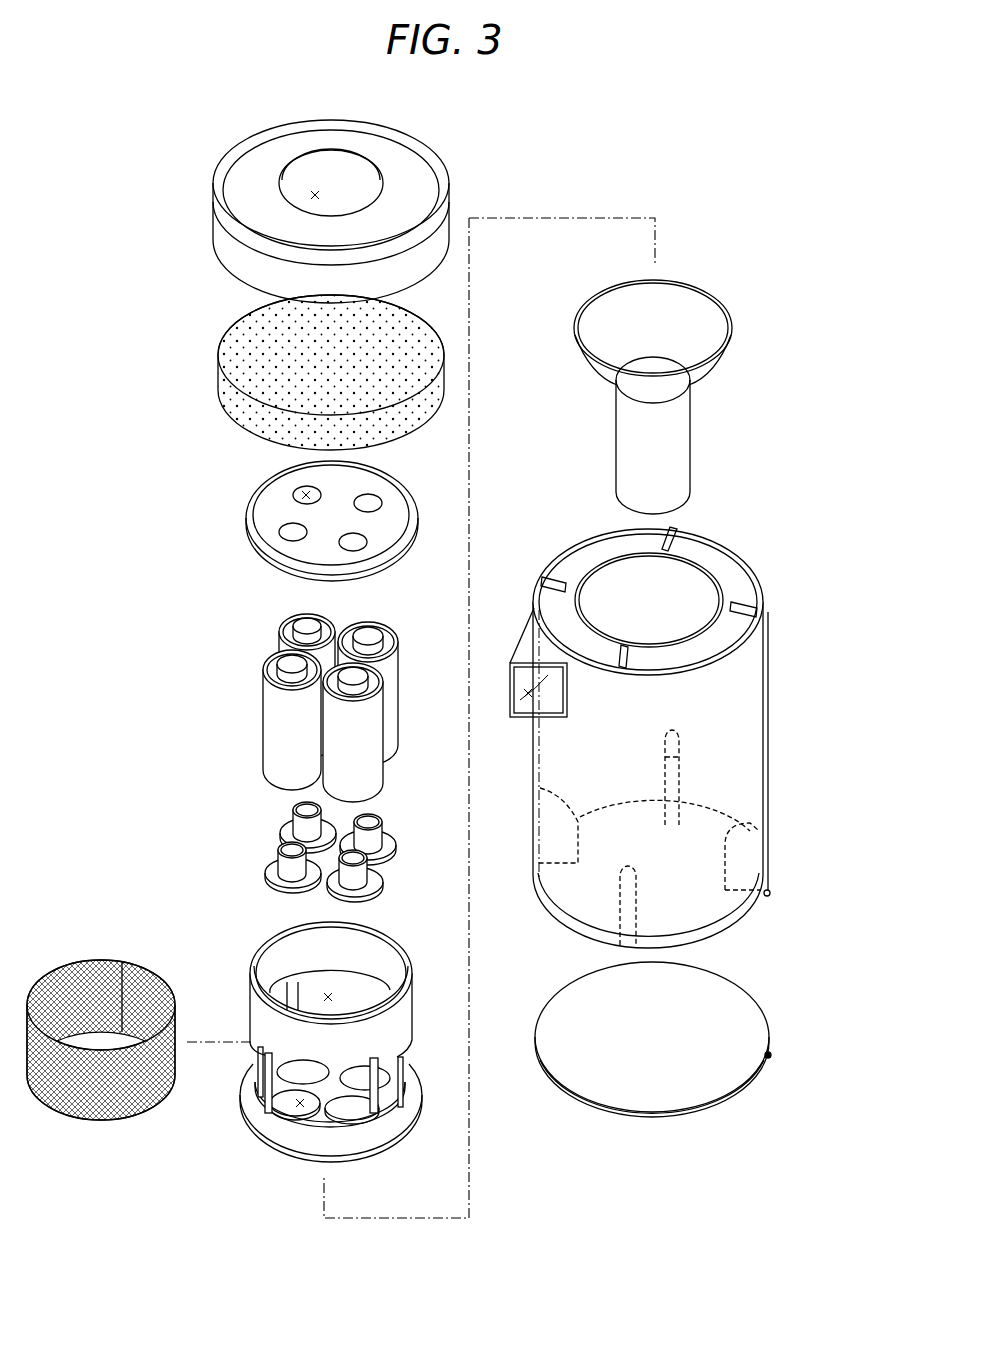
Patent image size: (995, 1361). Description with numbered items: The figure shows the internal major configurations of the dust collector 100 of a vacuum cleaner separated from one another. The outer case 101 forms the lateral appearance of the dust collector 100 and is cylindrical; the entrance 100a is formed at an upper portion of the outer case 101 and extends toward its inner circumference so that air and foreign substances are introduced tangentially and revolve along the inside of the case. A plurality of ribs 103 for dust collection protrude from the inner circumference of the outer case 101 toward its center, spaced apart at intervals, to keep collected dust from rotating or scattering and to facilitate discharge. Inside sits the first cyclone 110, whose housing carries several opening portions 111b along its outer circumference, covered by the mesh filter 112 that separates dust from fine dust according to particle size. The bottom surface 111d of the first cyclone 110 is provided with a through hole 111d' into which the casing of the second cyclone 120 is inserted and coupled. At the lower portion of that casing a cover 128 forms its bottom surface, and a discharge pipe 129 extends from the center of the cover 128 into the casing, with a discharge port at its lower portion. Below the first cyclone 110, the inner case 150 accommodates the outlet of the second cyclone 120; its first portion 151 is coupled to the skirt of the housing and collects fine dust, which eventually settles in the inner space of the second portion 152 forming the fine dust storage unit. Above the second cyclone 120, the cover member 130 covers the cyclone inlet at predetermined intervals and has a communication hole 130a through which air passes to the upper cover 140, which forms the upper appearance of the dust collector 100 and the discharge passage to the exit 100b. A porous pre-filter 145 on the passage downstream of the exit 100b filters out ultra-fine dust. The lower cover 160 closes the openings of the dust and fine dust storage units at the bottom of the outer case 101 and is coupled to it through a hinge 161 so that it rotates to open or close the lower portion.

The dust collector 100 is at (612, 163).
The entrance 100a is at (527, 700).
The exit 100b is at (310, 195).
The outer case 101 is at (667, 737).
The ribs for dust collection 103 is at (683, 765).
The first cyclone 110 is at (300, 1059).
The opening portion 111b is at (320, 990).
The bottom surface 111d is at (325, 1132).
The through hole 111d' is at (249, 1120).
The mesh filter 112 is at (97, 1120).
The second cyclone 120 is at (252, 710).
The cover 128 is at (275, 885).
The discharge pipe 129 is at (280, 860).
The cover member 130 is at (294, 521).
The communication hole 130a is at (295, 490).
The upper cover 140 is at (298, 211).
The porous pre-filter 145 is at (240, 338).
The inner case 150 is at (711, 397).
The first portion 151 is at (703, 373).
The second portion 152 is at (798, 360).
The lower cover 160 is at (700, 1043).
The hinge 161 is at (772, 1055).